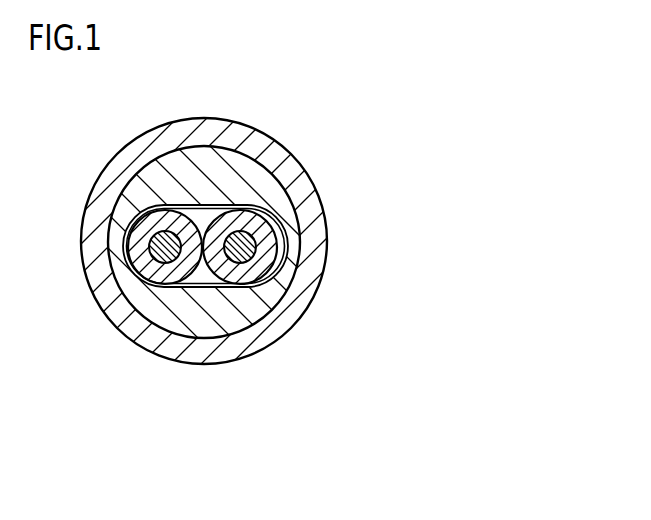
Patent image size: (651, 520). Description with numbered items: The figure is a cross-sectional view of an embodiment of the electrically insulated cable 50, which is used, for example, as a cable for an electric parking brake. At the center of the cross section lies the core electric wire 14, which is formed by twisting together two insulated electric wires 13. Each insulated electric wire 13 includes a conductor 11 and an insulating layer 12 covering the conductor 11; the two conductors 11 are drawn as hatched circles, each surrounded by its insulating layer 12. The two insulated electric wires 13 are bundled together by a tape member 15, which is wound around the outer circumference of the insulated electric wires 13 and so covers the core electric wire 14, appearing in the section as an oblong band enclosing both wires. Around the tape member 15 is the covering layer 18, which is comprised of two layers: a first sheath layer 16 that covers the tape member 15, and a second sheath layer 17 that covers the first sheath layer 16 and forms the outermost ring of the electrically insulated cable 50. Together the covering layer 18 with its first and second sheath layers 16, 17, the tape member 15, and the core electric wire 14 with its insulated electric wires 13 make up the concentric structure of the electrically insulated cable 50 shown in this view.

The electrically insulated cable 50 is at (298, 131).
The covering layer 18 is at (388, 155).
The second sheath layer 17 is at (280, 166).
The first sheath layer 16 is at (277, 204).
The tape member 15 is at (277, 243).
The core electric wire 14 is at (277, 443).
The insulated electric wire 13 is at (180, 407).
The insulating layer 12 is at (148, 272).
The conductor 11 is at (167, 253).